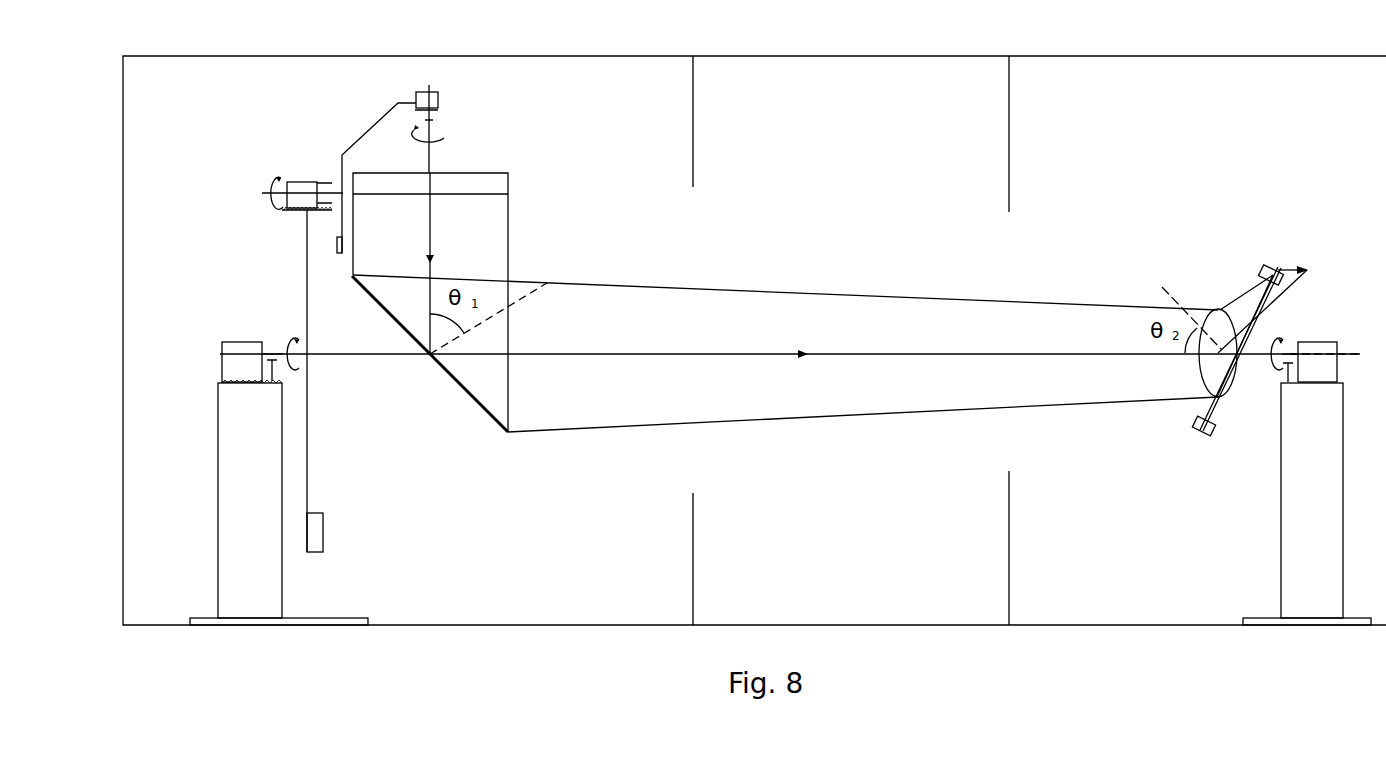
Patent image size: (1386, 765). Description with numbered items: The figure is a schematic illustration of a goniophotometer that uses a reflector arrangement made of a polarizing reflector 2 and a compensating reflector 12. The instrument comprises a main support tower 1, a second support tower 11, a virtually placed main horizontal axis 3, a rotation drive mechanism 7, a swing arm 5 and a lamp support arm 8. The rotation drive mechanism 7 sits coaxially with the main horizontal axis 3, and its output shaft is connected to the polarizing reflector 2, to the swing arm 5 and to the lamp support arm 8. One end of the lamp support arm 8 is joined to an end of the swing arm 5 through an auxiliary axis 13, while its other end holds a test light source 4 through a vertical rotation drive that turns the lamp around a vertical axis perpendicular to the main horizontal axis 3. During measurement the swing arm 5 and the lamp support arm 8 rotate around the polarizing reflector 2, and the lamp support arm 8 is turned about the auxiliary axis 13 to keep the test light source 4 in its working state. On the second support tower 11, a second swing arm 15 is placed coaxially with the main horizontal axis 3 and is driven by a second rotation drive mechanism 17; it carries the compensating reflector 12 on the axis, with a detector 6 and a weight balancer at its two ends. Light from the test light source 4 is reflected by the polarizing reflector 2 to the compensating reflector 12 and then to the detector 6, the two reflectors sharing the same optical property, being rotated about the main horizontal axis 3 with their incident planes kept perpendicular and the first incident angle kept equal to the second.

The main support tower 1 is at (240, 548).
The polarizing reflector 2 is at (475, 403).
The main horizontal axis 3 is at (643, 353).
The test light source 4 is at (520, 245).
The swing arm 5 is at (307, 320).
The detector 6 is at (1282, 268).
The rotation drive mechanism 7 is at (273, 343).
The lamp support arm 8 is at (370, 128).
The second support tower 11 is at (1328, 548).
The compensating reflector 12 is at (1200, 373).
The auxiliary axis 13 is at (272, 182).
The second swing arm 15 is at (1217, 418).
The second rotation drive mechanism 17 is at (1290, 341).